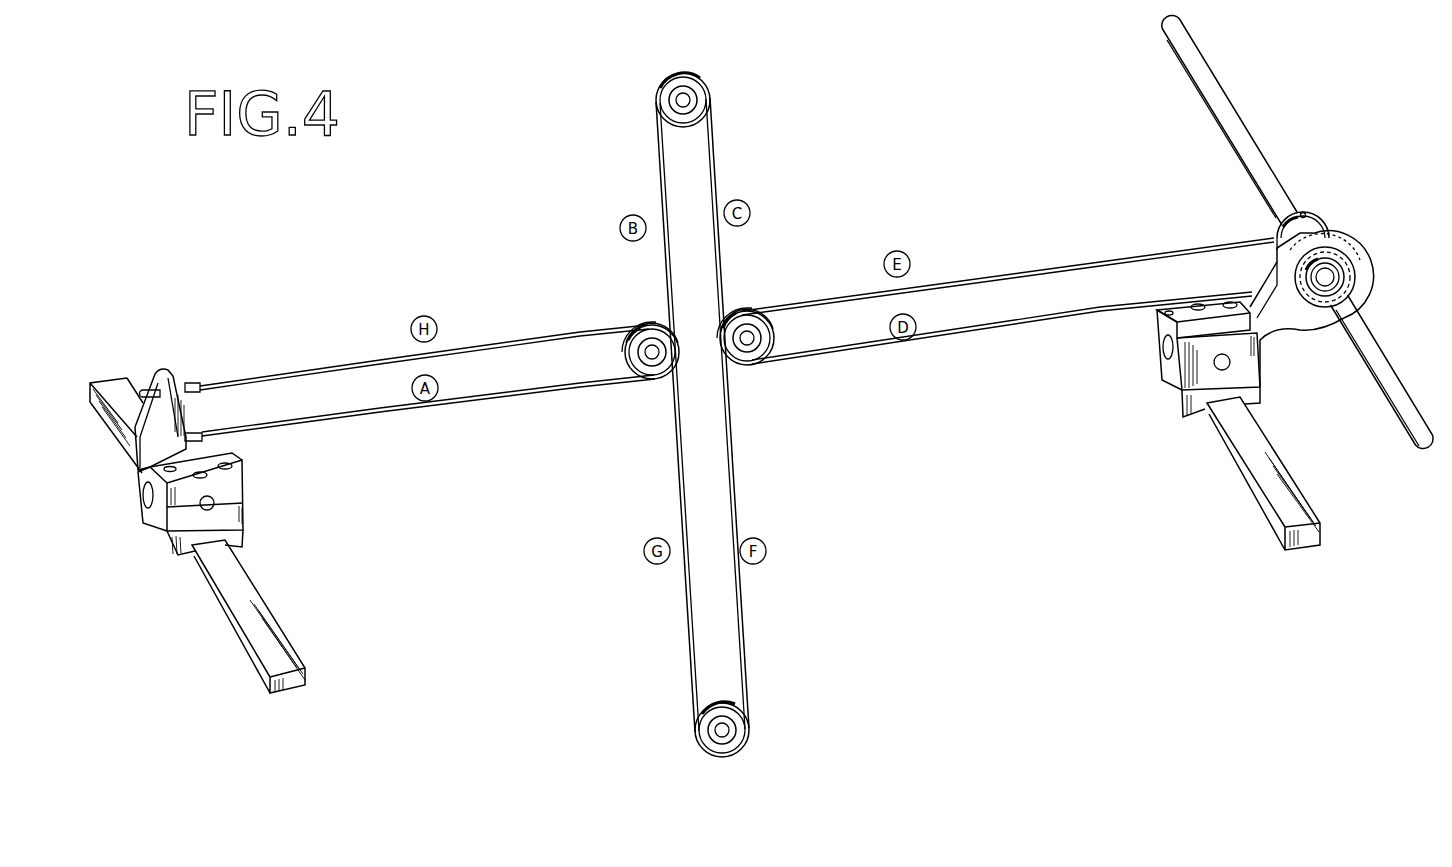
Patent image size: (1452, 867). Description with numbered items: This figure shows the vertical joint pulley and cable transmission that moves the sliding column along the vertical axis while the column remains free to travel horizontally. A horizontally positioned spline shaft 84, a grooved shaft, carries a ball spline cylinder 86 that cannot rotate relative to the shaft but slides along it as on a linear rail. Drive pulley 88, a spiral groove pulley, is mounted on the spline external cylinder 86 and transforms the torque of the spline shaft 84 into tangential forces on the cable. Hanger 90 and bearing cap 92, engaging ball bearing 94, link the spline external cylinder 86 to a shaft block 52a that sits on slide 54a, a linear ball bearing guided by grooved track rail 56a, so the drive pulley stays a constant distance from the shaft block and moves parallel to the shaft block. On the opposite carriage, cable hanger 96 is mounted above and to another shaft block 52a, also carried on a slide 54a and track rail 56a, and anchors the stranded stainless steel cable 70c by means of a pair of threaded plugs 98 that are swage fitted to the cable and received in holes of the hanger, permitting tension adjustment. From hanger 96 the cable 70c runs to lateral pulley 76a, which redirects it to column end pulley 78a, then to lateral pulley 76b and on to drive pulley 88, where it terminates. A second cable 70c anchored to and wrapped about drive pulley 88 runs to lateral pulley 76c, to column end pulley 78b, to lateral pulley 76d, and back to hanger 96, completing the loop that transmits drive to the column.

The shaft block 52a is at (243, 506).
The slide 54a is at (246, 536).
The track rail 56a is at (302, 655).
The cable 70c is at (548, 388).
The lateral pulley 76a is at (650, 380).
The lateral pulley 76b is at (755, 366).
The lateral pulley 76c is at (748, 312).
The lateral pulley 76d is at (643, 326).
The column end pulley 78a is at (690, 100).
The column end pulley 78b is at (730, 730).
The spline shaft 84 is at (1220, 115).
The ball spline cylinder 86 is at (1368, 296).
The drive pulley 88 is at (1320, 214).
The hanger 90 is at (1308, 325).
The bearing cap 92 is at (1366, 302).
The ball bearing 94 is at (1342, 268).
The cable hanger 96 is at (165, 378).
The threaded plugs 98 is at (196, 382).